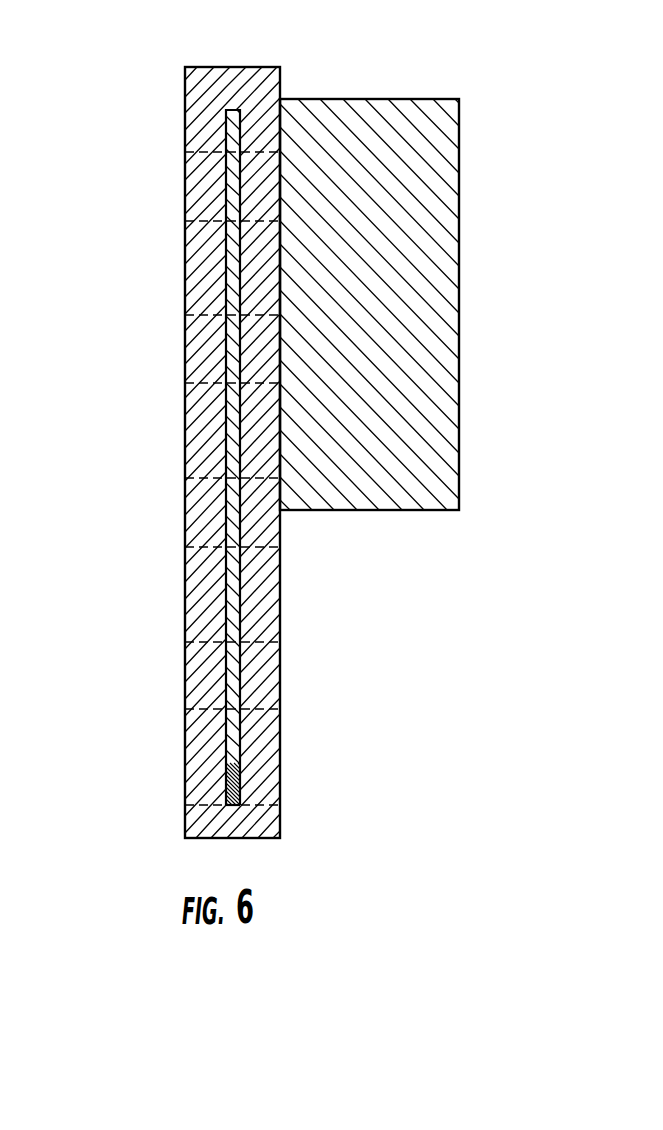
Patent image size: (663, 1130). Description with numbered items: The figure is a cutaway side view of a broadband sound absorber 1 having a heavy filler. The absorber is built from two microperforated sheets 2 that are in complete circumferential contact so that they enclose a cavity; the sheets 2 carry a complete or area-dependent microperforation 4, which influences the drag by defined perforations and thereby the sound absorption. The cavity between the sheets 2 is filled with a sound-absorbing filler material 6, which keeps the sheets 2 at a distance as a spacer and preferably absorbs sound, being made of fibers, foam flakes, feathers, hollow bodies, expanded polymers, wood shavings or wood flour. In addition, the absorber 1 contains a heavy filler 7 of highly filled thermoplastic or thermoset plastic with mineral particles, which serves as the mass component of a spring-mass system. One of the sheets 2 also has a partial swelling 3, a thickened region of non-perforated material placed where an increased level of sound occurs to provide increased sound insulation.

The broadband sound absorber 1 is at (291, 425).
The microperforated sheets 2 is at (265, 253).
The partial swelling 3 is at (438, 198).
The microperforation 4 is at (258, 640).
The sound-absorbing filler material 6 is at (235, 508).
The heavy filler 7 is at (230, 765).